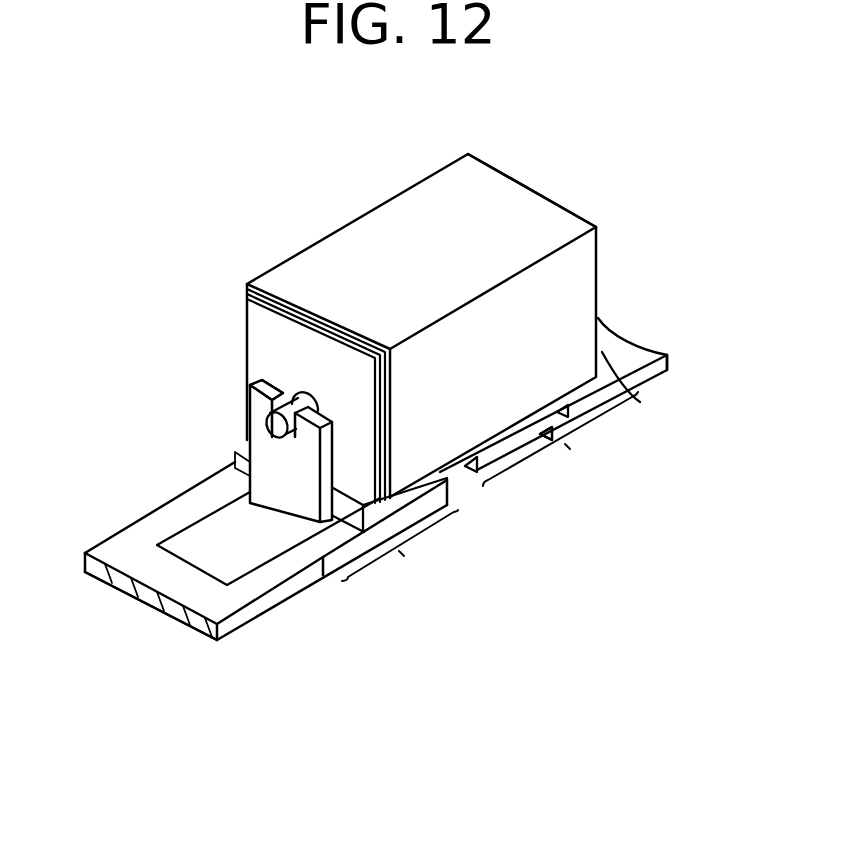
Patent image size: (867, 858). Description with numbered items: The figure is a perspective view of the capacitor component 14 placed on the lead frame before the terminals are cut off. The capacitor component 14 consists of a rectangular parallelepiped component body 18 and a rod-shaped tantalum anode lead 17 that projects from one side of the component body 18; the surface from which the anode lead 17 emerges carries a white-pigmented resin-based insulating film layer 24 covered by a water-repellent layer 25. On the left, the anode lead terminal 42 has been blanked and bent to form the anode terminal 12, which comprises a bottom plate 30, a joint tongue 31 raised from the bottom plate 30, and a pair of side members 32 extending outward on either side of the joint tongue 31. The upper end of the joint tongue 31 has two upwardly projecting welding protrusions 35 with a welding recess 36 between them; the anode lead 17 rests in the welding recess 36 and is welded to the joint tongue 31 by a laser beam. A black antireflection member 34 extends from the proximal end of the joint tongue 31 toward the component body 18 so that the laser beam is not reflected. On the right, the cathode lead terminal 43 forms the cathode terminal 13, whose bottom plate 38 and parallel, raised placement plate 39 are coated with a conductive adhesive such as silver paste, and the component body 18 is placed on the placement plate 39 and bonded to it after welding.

The anode terminal 12 is at (400, 551).
The cathode terminal 13 is at (553, 421).
The capacitor component 14 is at (397, 188).
The anode lead 17 is at (268, 428).
The component body 18 is at (330, 257).
The resin-based insulating film layer 24 is at (283, 287).
The water-repellent layer 25 is at (262, 316).
The bottom plate 30 is at (441, 486).
The joint tongue 31 is at (262, 478).
The side members 32 is at (230, 487).
The antireflection member 34 is at (353, 503).
The welding protrusions 35 is at (265, 408).
The welding recess 36 is at (288, 420).
The bottom plate 38 is at (622, 386).
The placement plate 39 is at (503, 442).
The anode lead terminal 42 is at (266, 626).
The cathode lead terminal 43 is at (655, 377).